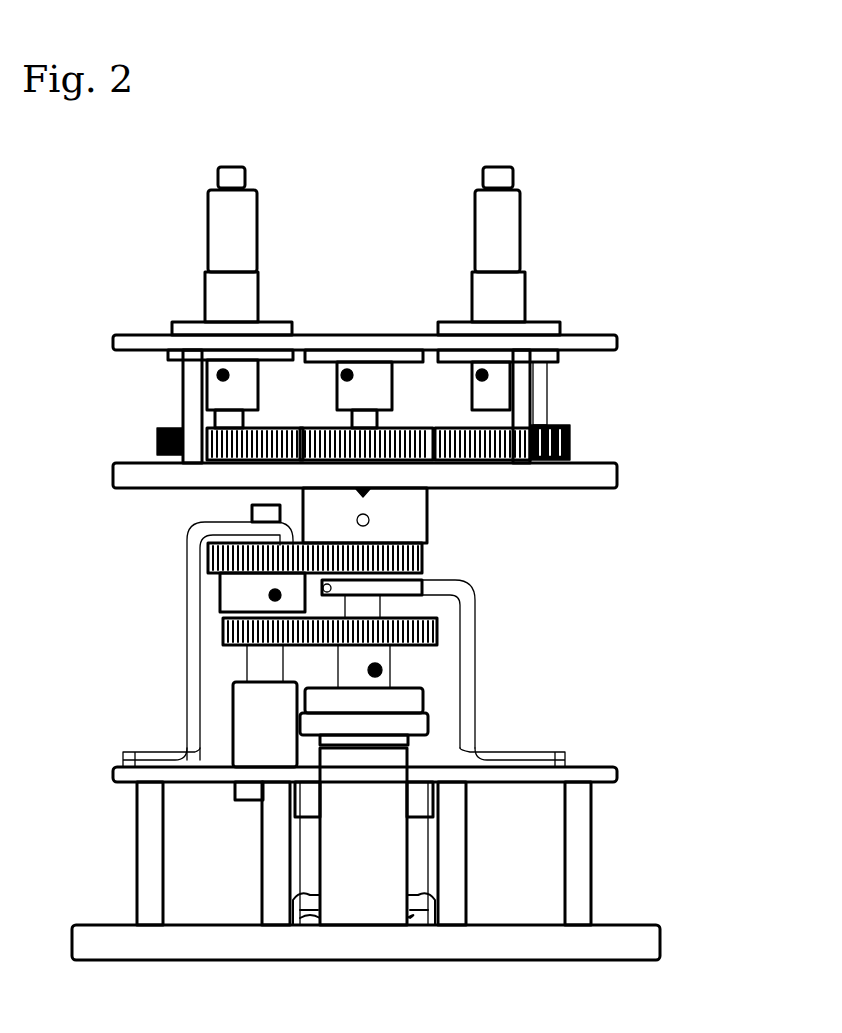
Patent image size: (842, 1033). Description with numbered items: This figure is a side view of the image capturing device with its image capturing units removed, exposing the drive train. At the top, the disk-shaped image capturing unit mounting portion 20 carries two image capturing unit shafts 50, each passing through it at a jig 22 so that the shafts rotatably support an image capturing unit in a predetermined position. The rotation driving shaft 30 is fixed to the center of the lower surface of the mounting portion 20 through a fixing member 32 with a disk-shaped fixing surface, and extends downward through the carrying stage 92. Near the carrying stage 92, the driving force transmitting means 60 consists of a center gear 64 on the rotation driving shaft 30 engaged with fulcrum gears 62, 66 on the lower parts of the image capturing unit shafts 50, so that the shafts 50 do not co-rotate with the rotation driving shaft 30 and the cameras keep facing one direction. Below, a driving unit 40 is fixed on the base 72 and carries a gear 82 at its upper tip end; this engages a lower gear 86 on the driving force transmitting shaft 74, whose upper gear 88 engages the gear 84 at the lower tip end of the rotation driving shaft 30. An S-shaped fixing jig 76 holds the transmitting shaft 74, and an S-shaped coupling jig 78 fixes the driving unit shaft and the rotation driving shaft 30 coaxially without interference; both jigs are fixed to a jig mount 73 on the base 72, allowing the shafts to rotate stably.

The image capturing unit mounting portion 20 is at (612, 347).
The jig 22 is at (230, 301).
The rotation driving shaft 30 is at (345, 428).
The fixing member 32 is at (372, 378).
The driving unit 40 is at (372, 866).
The image capturing unit shaft 50 is at (232, 212).
The driving force transmitting means 60 is at (690, 604).
The fulcrum gear 62 is at (568, 465).
The center gear 64 is at (427, 465).
The fulcrum gear 66 is at (290, 465).
The base 72 is at (662, 948).
The jig mount 73 is at (618, 773).
The driving force transmitting shaft 74 is at (255, 668).
The S-shaped fixing jig 76 is at (188, 718).
The S-shaped coupling jig 78 is at (512, 751).
The gear 82 is at (437, 648).
The gear 84 is at (440, 572).
The lower gear 86 is at (230, 640).
The upper gear 88 is at (208, 560).
The carrying stage 92 is at (575, 473).